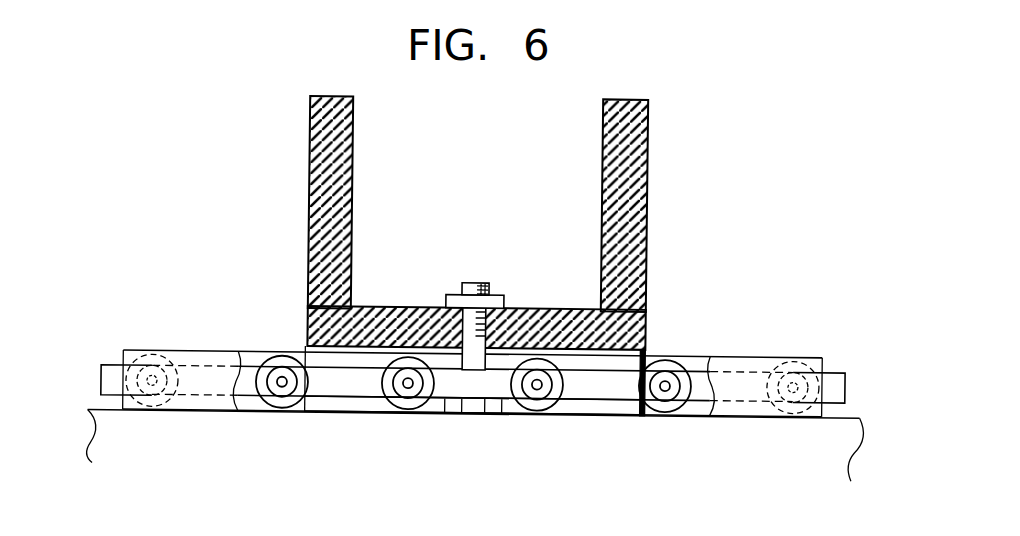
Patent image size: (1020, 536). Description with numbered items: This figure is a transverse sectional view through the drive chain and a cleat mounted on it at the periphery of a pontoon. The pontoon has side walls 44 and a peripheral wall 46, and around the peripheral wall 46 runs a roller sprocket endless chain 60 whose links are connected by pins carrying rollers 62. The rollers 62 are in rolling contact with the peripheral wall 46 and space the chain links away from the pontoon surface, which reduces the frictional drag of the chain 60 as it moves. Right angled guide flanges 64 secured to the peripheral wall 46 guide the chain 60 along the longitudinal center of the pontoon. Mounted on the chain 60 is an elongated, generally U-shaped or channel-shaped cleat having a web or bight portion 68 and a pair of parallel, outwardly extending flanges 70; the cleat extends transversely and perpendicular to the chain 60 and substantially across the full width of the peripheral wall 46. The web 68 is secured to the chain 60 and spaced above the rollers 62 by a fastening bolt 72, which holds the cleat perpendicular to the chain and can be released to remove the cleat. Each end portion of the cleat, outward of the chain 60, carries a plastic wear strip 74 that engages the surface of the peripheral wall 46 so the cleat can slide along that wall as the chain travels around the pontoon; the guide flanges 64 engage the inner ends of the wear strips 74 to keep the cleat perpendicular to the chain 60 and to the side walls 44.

The side walls 44 is at (102, 435).
The peripheral wall 46 is at (117, 402).
The roller sprocket endless chain 60 is at (697, 393).
The rollers 62 is at (667, 366).
The right angled guide flanges 64 is at (757, 365).
The web or bight portion 68 is at (388, 307).
The flanges 70 is at (628, 152).
The fastening bolt 72 is at (468, 287).
The plastic wear strip 74 is at (610, 407).